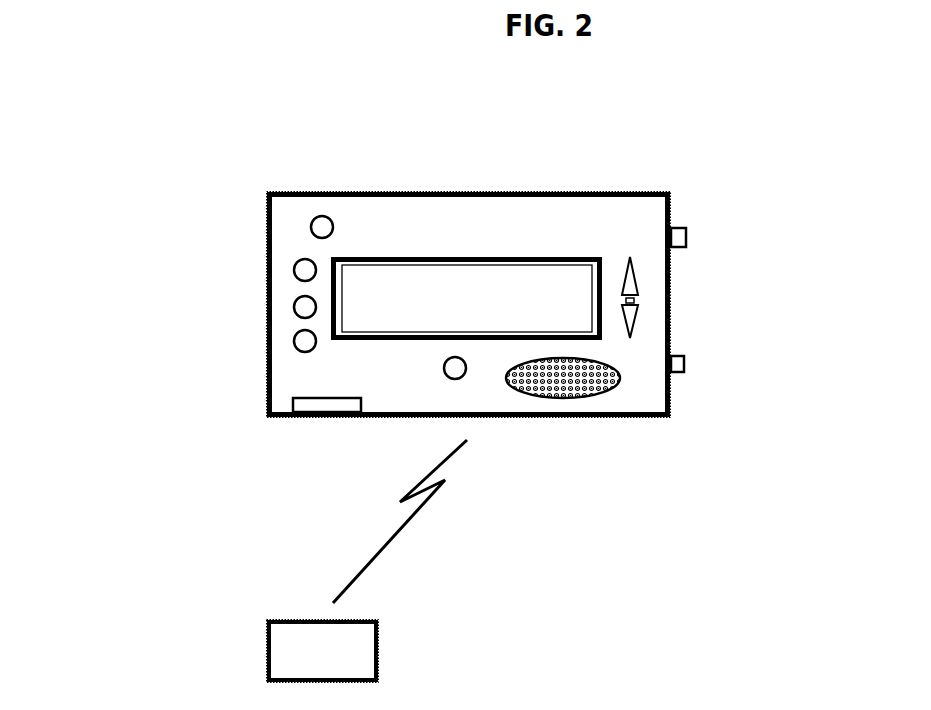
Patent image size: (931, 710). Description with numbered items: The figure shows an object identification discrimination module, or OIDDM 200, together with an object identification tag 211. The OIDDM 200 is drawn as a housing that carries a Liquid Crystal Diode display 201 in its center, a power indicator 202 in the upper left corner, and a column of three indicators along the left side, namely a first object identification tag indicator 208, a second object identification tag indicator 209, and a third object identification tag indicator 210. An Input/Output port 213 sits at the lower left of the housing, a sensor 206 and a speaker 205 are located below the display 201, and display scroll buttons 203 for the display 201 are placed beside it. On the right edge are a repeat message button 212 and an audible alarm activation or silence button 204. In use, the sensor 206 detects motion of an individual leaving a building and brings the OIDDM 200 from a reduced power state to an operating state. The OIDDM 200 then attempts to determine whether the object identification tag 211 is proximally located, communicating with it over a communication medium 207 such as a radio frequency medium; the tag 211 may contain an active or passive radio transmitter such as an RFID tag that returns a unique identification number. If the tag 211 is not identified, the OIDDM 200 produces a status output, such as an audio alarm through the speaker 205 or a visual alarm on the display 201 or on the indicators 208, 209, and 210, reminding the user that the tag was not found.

The object identification discrimination module 200 is at (199, 102).
The Liquid Crystal Diode display 201 is at (561, 223).
The power indicator 202 is at (345, 204).
The display scroll buttons 203 is at (661, 290).
The audible alarm activation or silence button 204 is at (704, 384).
The speaker 205 is at (629, 403).
The sensor 206 is at (484, 396).
The communication medium 207 is at (400, 521).
The first object identification tag indicator 208 is at (276, 268).
The second object identification tag indicator 209 is at (276, 307).
The third object identification tag indicator 210 is at (277, 347).
The object identification tag 211 is at (330, 661).
The repeat message button 212 is at (707, 215).
The Input/Output port 213 is at (268, 431).